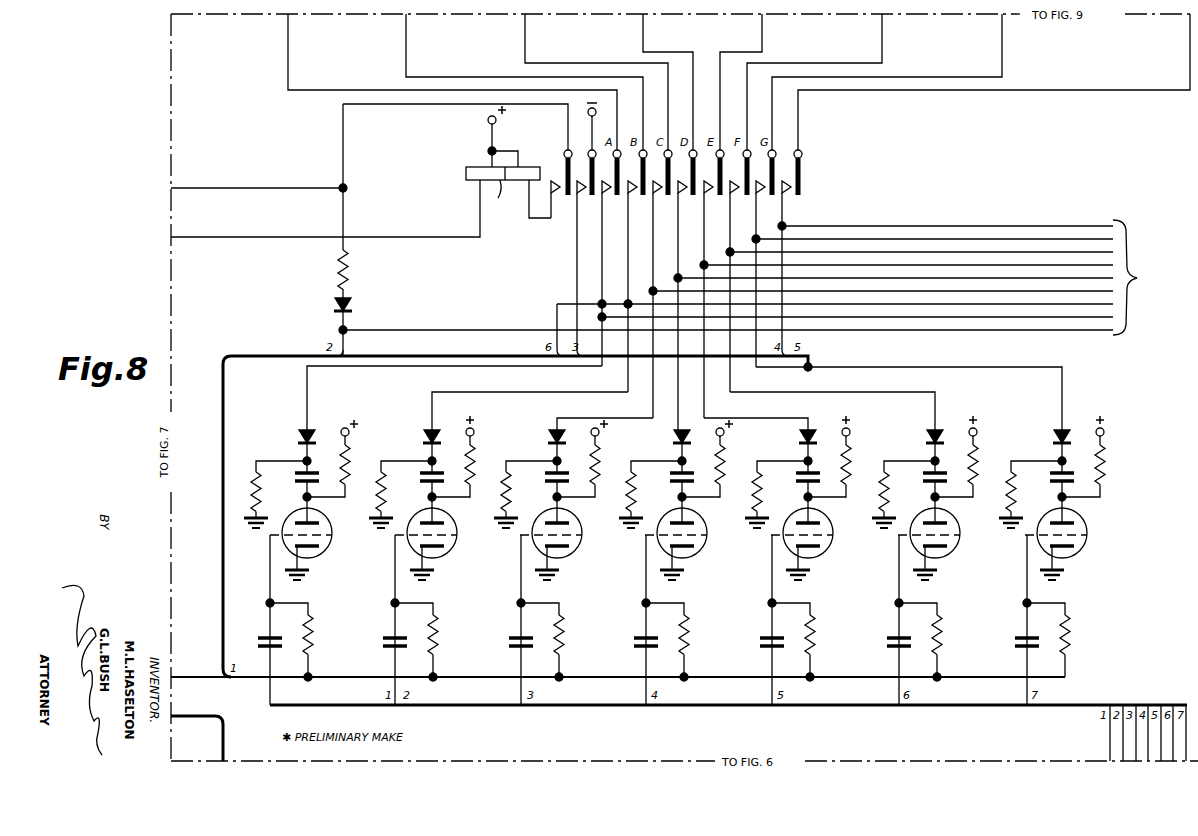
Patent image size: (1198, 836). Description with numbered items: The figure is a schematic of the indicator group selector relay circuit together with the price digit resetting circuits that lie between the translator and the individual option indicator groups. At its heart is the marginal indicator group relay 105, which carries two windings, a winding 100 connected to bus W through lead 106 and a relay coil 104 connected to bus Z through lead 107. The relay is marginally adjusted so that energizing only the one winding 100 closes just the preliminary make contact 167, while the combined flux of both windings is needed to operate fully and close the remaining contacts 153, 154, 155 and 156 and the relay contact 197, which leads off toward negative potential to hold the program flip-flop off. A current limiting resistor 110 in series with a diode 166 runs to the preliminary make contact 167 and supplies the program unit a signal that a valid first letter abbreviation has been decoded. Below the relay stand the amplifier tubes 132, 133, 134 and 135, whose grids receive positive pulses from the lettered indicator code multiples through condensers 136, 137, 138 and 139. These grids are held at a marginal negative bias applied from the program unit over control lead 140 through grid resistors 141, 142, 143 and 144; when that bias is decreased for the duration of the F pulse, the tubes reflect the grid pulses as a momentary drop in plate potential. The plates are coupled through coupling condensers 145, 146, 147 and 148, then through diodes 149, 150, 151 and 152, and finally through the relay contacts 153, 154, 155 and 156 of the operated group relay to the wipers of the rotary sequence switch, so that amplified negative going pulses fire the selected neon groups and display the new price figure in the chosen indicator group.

The relay winding 100 is at (466, 178).
The relay coil 104 is at (566, 154).
The indicator group relay 105 is at (498, 196).
The lead 106 is at (385, 237).
The lead 107 is at (343, 150).
The current limiting resistor 110 is at (346, 270).
The diode 166 is at (350, 307).
The preliminary make contact 167 is at (568, 200).
The relay contact 197 is at (592, 200).
The relay contact 153 is at (617, 200).
The relay contact 154 is at (668, 200).
The relay contact 155 is at (693, 200).
The relay contact 156 is at (772, 200).
The diode 149 is at (319, 420).
The diode 150 is at (569, 420).
The diode 151 is at (694, 420).
The diode 152 is at (1074, 420).
The coupling condenser 145 is at (312, 470).
The coupling condenser 146 is at (562, 470).
The coupling condenser 147 is at (687, 470).
The coupling condenser 148 is at (1073, 462).
The amplifier tube 132 is at (326, 550).
The amplifier tube 133 is at (576, 550).
The amplifier tube 134 is at (701, 550).
The amplifier tube 135 is at (1081, 550).
The condenser 136 is at (275, 636).
The condenser 137 is at (532, 629).
The condenser 138 is at (657, 629).
The condenser 139 is at (1038, 629).
The control lead 140 is at (286, 670).
The grid resistor 141 is at (313, 628).
The grid resistor 142 is at (564, 628).
The grid resistor 143 is at (689, 628).
The grid resistor 144 is at (1070, 628).